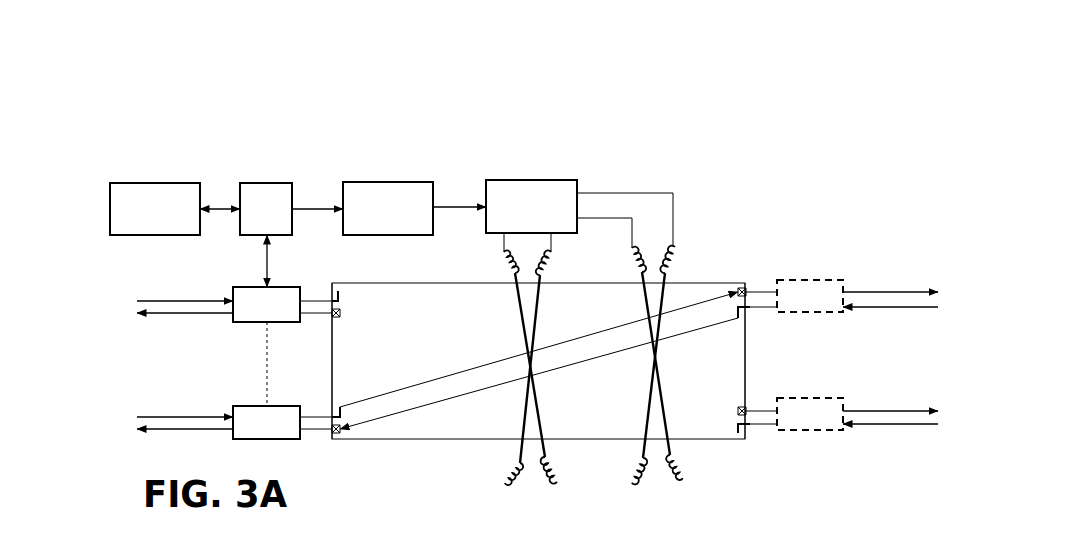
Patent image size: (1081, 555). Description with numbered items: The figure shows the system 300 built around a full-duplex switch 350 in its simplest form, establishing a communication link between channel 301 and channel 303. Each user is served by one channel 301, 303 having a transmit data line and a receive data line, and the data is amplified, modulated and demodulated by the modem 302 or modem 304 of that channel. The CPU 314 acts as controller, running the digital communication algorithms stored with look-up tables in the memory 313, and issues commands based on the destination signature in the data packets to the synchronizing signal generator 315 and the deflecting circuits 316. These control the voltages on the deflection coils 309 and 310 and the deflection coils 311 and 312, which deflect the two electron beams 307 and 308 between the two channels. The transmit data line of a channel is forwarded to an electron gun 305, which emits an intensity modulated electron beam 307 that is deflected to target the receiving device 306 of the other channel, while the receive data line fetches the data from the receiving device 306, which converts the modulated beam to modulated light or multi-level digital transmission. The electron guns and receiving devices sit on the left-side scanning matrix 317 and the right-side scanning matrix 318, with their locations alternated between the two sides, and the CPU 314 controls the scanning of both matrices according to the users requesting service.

The system 300 is at (617, 125).
The channel 301 is at (179, 308).
The modem 302 is at (242, 285).
The channel 303 is at (185, 422).
The modem 304 is at (240, 405).
The electron gun 305 is at (343, 292).
The receiving device 306 is at (344, 318).
The electron beam 307 is at (482, 366).
The electron beam 308 is at (410, 412).
The deflection coil 309 is at (506, 265).
The deflection coil 310 is at (549, 270).
The deflection coil 311 is at (644, 246).
The deflection coil 312 is at (704, 257).
The memory 313 is at (156, 180).
The CPU 314 is at (267, 180).
The synchronizing signal generator 315 is at (383, 180).
The deflecting circuits 316 is at (532, 178).
The left-side scanning matrix 317 is at (330, 362).
The right-side scanning matrix 318 is at (749, 360).
The full-duplex switch 350 is at (742, 280).